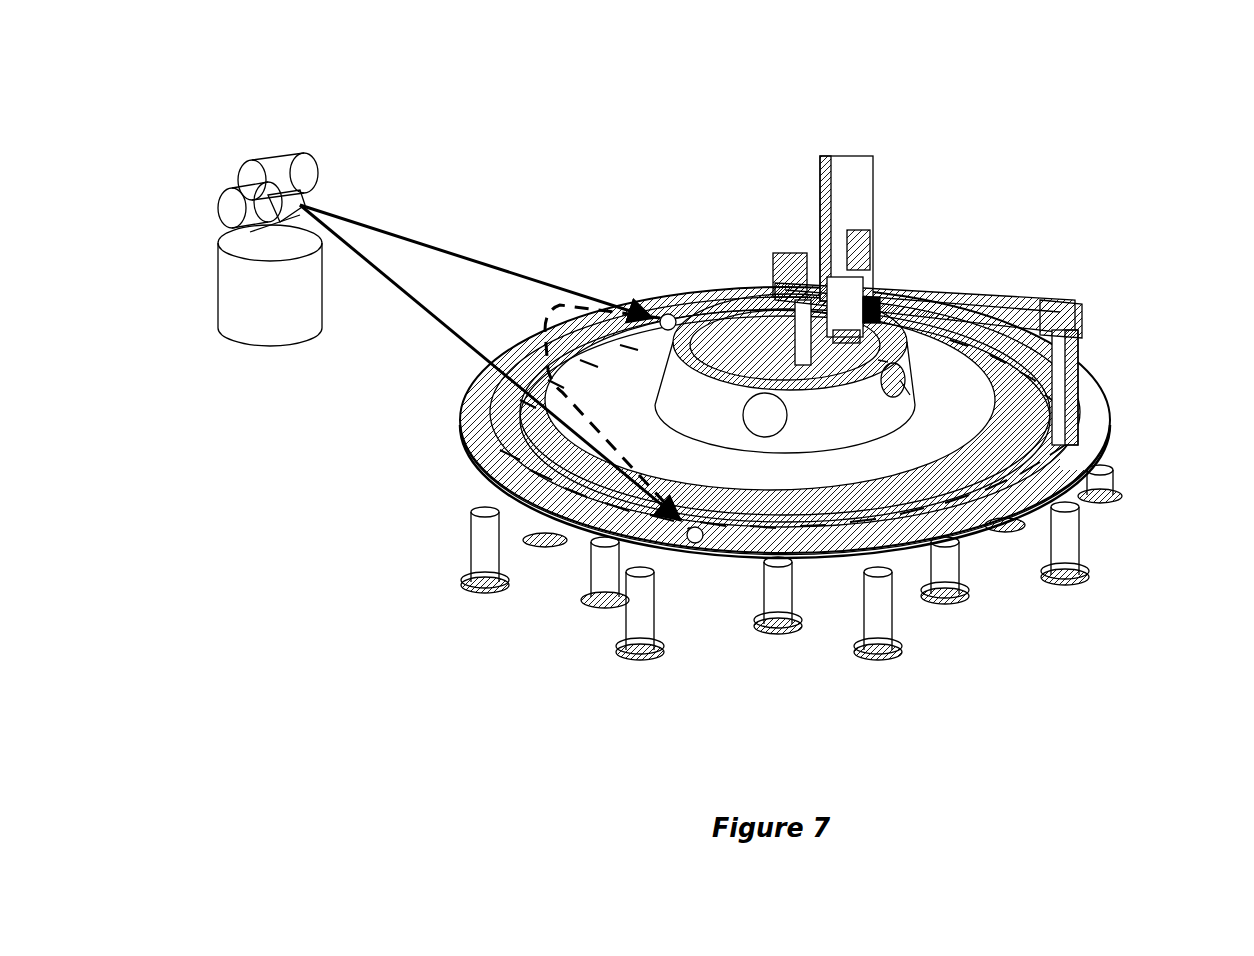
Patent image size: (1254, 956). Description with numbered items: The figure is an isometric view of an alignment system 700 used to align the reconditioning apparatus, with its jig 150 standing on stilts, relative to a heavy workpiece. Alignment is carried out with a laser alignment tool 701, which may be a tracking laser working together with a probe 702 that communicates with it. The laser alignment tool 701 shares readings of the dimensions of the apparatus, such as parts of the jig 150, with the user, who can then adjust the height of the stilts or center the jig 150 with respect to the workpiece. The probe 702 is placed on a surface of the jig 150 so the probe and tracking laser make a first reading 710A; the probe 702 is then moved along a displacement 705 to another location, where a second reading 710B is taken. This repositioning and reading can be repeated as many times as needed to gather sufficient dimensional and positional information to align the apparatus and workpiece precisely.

The alignment system 700 is at (1026, 131).
The jig 150 is at (1140, 532).
The laser alignment tool 701 is at (238, 243).
The probe 702 is at (662, 318).
The displacement 705 is at (497, 385).
The first reading 710A is at (467, 337).
The second reading 710B is at (474, 252).